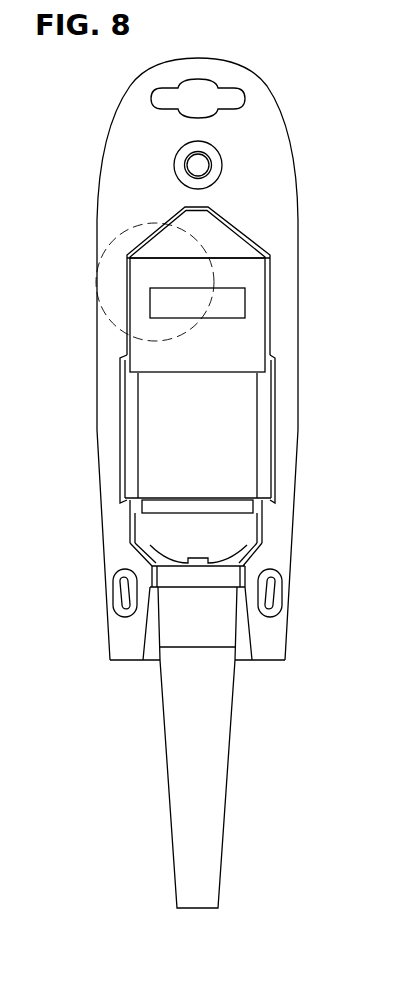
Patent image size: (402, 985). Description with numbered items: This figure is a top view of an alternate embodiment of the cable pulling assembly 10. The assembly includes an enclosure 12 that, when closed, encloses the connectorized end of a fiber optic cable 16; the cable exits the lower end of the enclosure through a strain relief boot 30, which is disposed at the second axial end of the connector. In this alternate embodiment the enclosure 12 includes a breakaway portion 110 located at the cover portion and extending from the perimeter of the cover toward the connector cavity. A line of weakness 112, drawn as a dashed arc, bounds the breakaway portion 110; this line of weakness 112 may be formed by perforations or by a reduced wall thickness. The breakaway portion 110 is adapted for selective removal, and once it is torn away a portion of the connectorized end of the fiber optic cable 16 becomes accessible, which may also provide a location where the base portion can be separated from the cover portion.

The cable pulling assembly 10 is at (98, 113).
The enclosure 12 is at (281, 113).
The line of weakness 112 is at (122, 223).
The breakaway portion 110 is at (108, 285).
The strain relief boot 30 is at (168, 777).
The fiber optic cable 16 is at (233, 802).